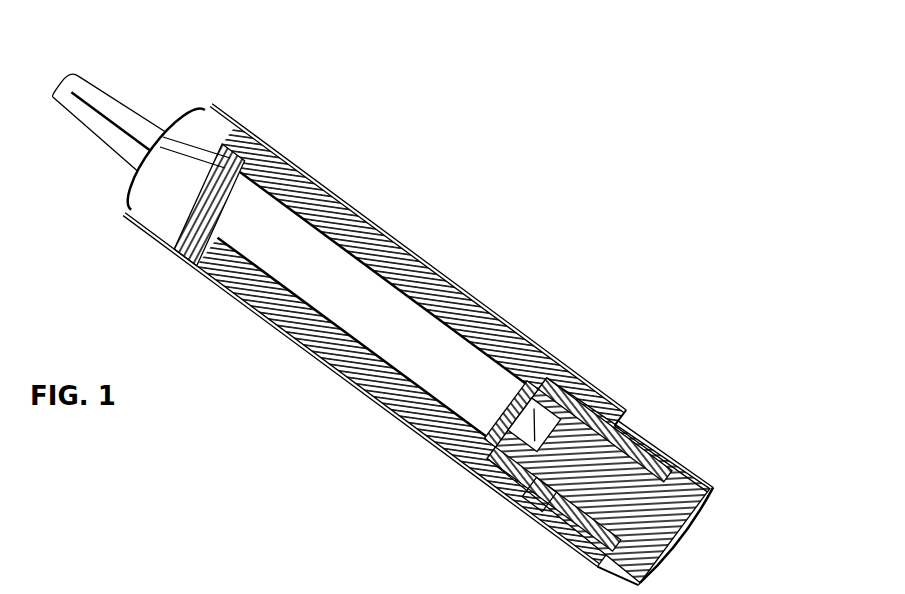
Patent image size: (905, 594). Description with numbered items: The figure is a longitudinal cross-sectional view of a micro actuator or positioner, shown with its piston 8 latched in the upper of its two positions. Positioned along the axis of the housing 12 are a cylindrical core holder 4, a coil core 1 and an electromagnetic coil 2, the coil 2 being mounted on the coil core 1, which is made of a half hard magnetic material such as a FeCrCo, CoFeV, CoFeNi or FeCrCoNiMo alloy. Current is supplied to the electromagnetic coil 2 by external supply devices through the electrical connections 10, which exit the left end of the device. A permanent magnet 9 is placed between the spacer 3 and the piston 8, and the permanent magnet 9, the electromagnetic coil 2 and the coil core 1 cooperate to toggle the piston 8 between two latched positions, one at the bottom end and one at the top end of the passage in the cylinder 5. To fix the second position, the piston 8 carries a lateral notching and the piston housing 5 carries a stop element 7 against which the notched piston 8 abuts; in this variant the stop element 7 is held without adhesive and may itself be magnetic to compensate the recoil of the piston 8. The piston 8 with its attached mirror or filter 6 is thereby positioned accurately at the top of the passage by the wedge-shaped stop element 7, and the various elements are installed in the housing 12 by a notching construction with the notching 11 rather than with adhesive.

The coil core 1 is at (247, 213).
The electromagnetic coil 2 is at (372, 230).
The spacer 3 is at (507, 333).
The cylindrical core holder 4 is at (570, 377).
The cylinder 5 is at (657, 443).
The mirror or filter 6 is at (660, 528).
The stop element 7 is at (710, 513).
The piston 8 is at (533, 497).
The permanent magnet 9 is at (490, 455).
The electrical connections 10 is at (108, 88).
The notching 11 is at (623, 430).
The housing 12 is at (450, 287).